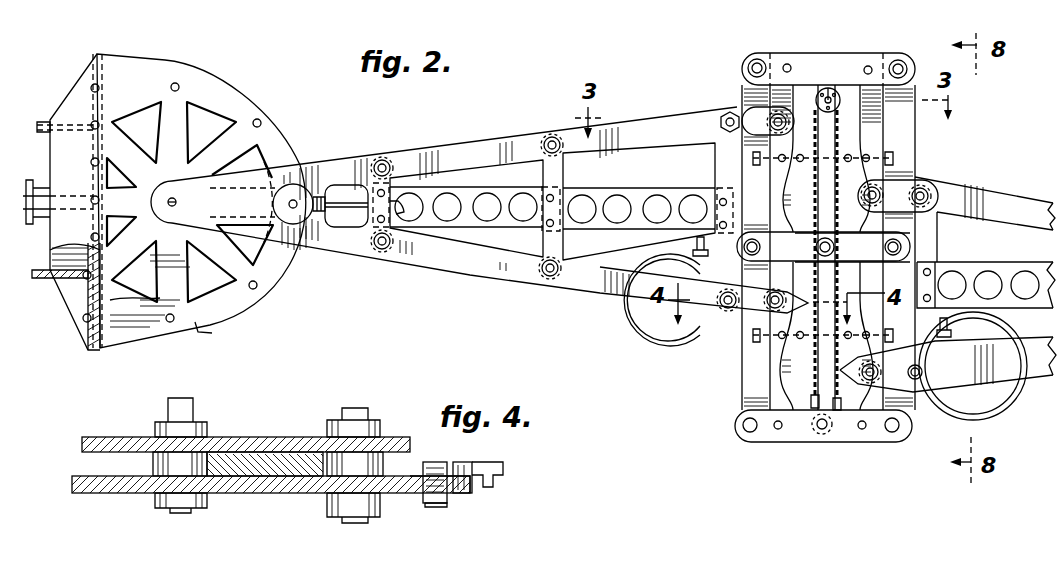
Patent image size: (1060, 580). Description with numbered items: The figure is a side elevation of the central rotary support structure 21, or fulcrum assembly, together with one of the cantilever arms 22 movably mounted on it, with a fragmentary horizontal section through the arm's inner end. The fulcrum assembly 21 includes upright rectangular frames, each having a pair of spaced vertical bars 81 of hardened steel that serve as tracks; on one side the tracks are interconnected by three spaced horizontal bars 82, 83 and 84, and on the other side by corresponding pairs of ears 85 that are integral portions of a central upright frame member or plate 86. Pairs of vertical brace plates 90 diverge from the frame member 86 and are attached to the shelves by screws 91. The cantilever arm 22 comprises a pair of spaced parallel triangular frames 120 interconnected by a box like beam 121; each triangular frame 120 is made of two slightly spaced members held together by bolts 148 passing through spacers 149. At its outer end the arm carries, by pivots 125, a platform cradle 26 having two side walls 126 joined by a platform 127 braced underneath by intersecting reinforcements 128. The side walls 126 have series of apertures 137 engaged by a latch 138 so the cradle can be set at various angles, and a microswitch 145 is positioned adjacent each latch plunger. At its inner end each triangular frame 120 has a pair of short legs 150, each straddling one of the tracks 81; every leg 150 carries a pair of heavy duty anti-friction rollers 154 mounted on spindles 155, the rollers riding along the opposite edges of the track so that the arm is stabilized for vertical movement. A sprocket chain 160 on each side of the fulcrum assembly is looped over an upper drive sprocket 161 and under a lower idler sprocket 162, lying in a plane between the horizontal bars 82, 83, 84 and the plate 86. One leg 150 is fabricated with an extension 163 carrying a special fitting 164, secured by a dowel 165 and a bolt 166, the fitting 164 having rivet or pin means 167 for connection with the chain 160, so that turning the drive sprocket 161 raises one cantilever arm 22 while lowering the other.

In FIG. 2, the central rotary support structure 21 is at (899, 127).
In FIG. 4, the central rotary support structure 21 is at (224, 462).
In FIG. 2, the cantilever arm 22 is at (489, 139).
In FIG. 4, the cantilever arm 22 is at (96, 438).
In FIG. 2, the platform cradle 26 is at (234, 100).
In FIG. 2, the vertical bar 81 is at (742, 88).
In FIG. 4, the vertical bar 81 is at (247, 478).
In FIG. 2, the horizontal bar 82 is at (766, 60).
In FIG. 2, the horizontal bar 83 is at (905, 244).
In FIG. 2, the horizontal bar 84 is at (792, 437).
In FIG. 2, the ear 85 is at (866, 66).
In FIG. 2, the central upright frame member 86 is at (826, 88).
In FIG. 2, the vertical brace plate 90 is at (875, 147).
In FIG. 2, the screw 91 is at (785, 346).
In FIG. 2, the triangular frame 120 is at (437, 152).
In FIG. 4, the triangular frame 120 is at (125, 494).
In FIG. 2, the box like beam 121 is at (595, 190).
In FIG. 2, the pivot 125 is at (188, 206).
In FIG. 2, the side wall 126 is at (217, 334).
In FIG. 2, the platform 127 is at (90, 312).
In FIG. 2, the reinforcement 128 is at (55, 279).
In FIG. 2, the aperture 137 is at (257, 288).
In FIG. 2, the latch 138 is at (296, 192).
In FIG. 2, the microswitch 145 is at (323, 222).
In FIG. 2, the bolt 148 is at (382, 252).
In FIG. 2, the spacer 149 is at (557, 280).
In FIG. 2, the leg 150 is at (748, 112).
In FIG. 4, the leg 150 is at (283, 447).
In FIG. 2, the anti-friction roller 154 is at (730, 128).
In FIG. 4, the anti-friction roller 154 is at (153, 466).
In FIG. 2, the spindle 155 is at (925, 198).
In FIG. 4, the spindle 155 is at (368, 413).
In FIG. 2, the sprocket chain 160 is at (810, 393).
In FIG. 2, the upper drive sprocket 161 is at (832, 88).
In FIG. 2, the lower idler sprocket 162 is at (838, 410).
In FIG. 2, the extension 163 is at (773, 335).
In FIG. 4, the extension 163 is at (401, 497).
In FIG. 4, the fitting 164 is at (440, 454).
In FIG. 4, the dowel 165 is at (458, 494).
In FIG. 4, the bolt 166 is at (438, 508).
In FIG. 2, the rivet or pin means 167 is at (823, 246).
In FIG. 4, the rivet or pin means 167 is at (490, 464).